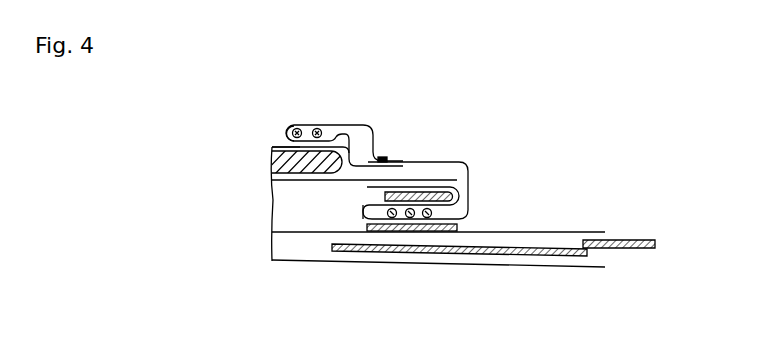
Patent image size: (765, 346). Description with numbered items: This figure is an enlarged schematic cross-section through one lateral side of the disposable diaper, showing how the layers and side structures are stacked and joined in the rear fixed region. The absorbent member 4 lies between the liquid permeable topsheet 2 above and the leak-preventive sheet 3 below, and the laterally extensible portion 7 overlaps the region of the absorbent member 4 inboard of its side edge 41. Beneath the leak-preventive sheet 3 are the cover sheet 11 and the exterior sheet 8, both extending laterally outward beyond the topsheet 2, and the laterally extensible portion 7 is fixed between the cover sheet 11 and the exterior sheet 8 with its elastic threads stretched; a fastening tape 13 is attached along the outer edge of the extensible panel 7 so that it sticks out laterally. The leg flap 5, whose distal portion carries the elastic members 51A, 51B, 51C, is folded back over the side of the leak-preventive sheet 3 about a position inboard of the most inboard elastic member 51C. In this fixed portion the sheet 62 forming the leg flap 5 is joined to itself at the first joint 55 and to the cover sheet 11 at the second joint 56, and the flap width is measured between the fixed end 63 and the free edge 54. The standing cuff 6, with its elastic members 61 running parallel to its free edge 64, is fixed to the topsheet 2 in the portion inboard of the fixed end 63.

The topsheet 2 is at (282, 145).
The leak-preventive sheet 3 is at (272, 180).
The absorbent member 4 is at (274, 165).
The leg flap 5 is at (472, 210).
The standing cuff 6 is at (280, 73).
The laterally extensible portion 7 is at (531, 257).
The exterior sheet 8 is at (577, 268).
The cover sheet 11 is at (287, 229).
The fastening tape 13 is at (623, 249).
The side edge of absorbent member 41 is at (348, 147).
The elastic member 51A is at (390, 220).
The elastic member 51B is at (408, 220).
The elastic member 51C is at (427, 220).
The free edge 54 is at (365, 213).
The first joint 55 is at (434, 189).
The second joint 56 is at (460, 227).
The elastic members 61 is at (317, 128).
The sheet forming the leg flap 62 is at (432, 162).
The fixed end 63 is at (385, 156).
The free edge of cuff 64 is at (288, 134).